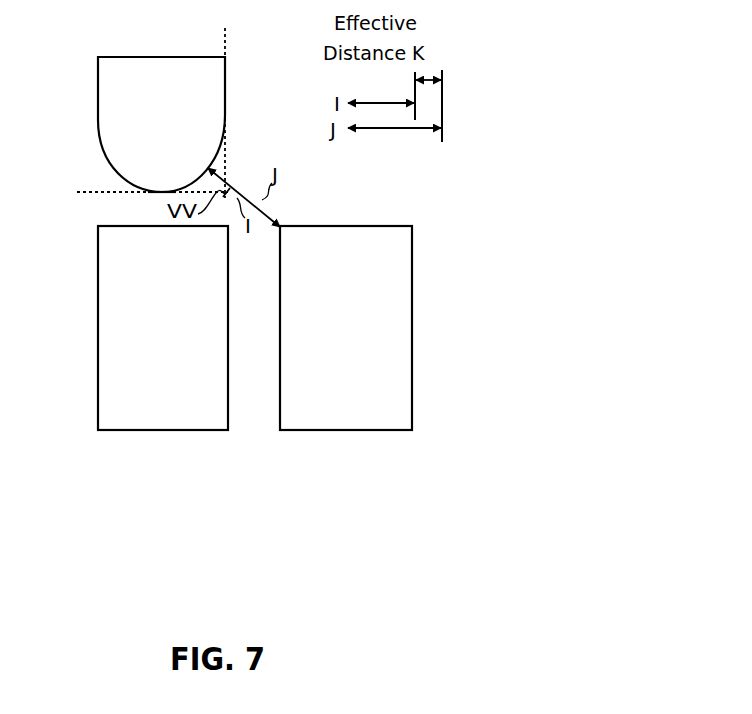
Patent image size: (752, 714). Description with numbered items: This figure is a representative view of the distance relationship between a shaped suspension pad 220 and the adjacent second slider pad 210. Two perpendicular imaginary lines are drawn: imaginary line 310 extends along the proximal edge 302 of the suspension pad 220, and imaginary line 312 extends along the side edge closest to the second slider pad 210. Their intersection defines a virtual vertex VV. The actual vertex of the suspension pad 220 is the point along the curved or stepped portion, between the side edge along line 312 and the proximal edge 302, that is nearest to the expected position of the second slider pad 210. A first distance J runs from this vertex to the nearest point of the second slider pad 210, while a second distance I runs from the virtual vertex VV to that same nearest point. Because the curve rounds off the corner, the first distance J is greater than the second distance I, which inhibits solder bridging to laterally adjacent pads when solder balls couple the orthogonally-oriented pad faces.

The suspension pad 220 is at (141, 57).
The imaginary line along side edge 312 is at (228, 38).
The imaginary line along proximal edge 310 is at (95, 192).
The proximal edge 302 is at (162, 194).
The second slider pad 210 is at (228, 378).